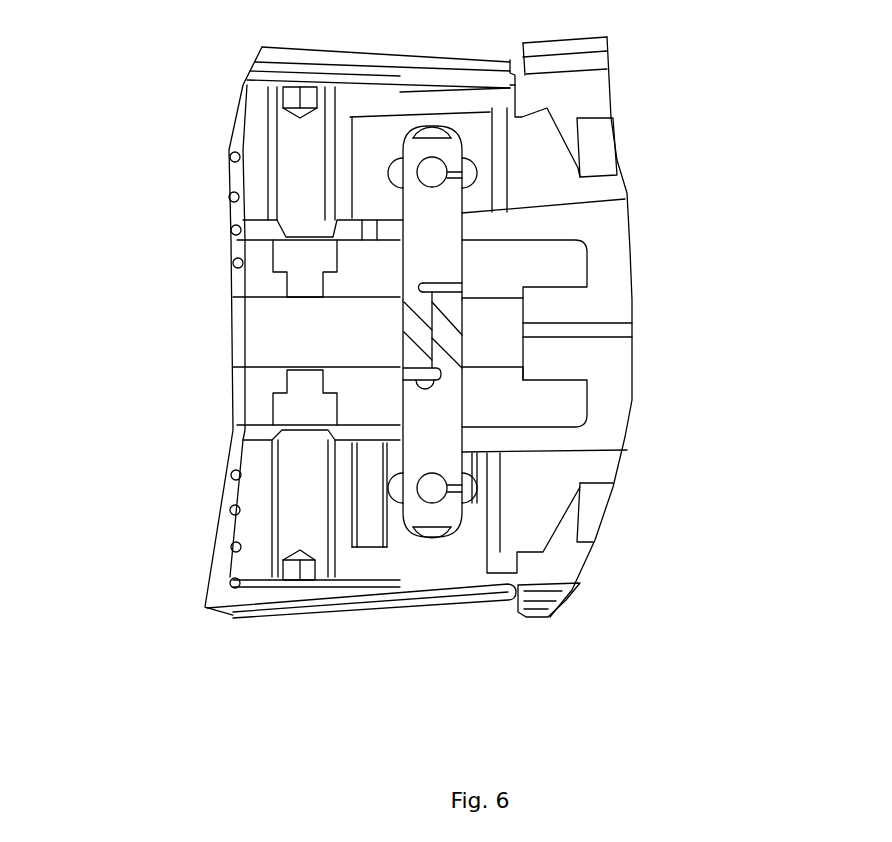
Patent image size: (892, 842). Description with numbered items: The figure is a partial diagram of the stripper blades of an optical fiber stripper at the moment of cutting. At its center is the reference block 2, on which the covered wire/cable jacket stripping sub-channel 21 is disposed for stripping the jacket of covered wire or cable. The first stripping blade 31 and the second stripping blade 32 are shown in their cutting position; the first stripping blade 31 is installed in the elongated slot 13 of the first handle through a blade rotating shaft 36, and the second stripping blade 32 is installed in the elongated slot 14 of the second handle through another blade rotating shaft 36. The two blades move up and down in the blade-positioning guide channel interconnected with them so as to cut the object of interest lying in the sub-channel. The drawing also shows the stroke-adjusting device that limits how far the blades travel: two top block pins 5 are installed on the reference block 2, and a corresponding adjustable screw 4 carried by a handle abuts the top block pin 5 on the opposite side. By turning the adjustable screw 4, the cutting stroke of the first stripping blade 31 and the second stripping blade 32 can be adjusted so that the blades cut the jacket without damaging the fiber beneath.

The reference block 2 is at (557, 257).
The adjustable screw 4 is at (307, 570).
The top block pin 5 is at (295, 258).
The elongated slot 13 is at (472, 168).
The elongated slot 14 is at (468, 490).
The covered wire/cable jacket stripping sub-channel 21 is at (305, 335).
The first stripping blade 31 is at (450, 194).
The second stripping blade 32 is at (445, 437).
The blade rotating shaft 36 is at (432, 172).